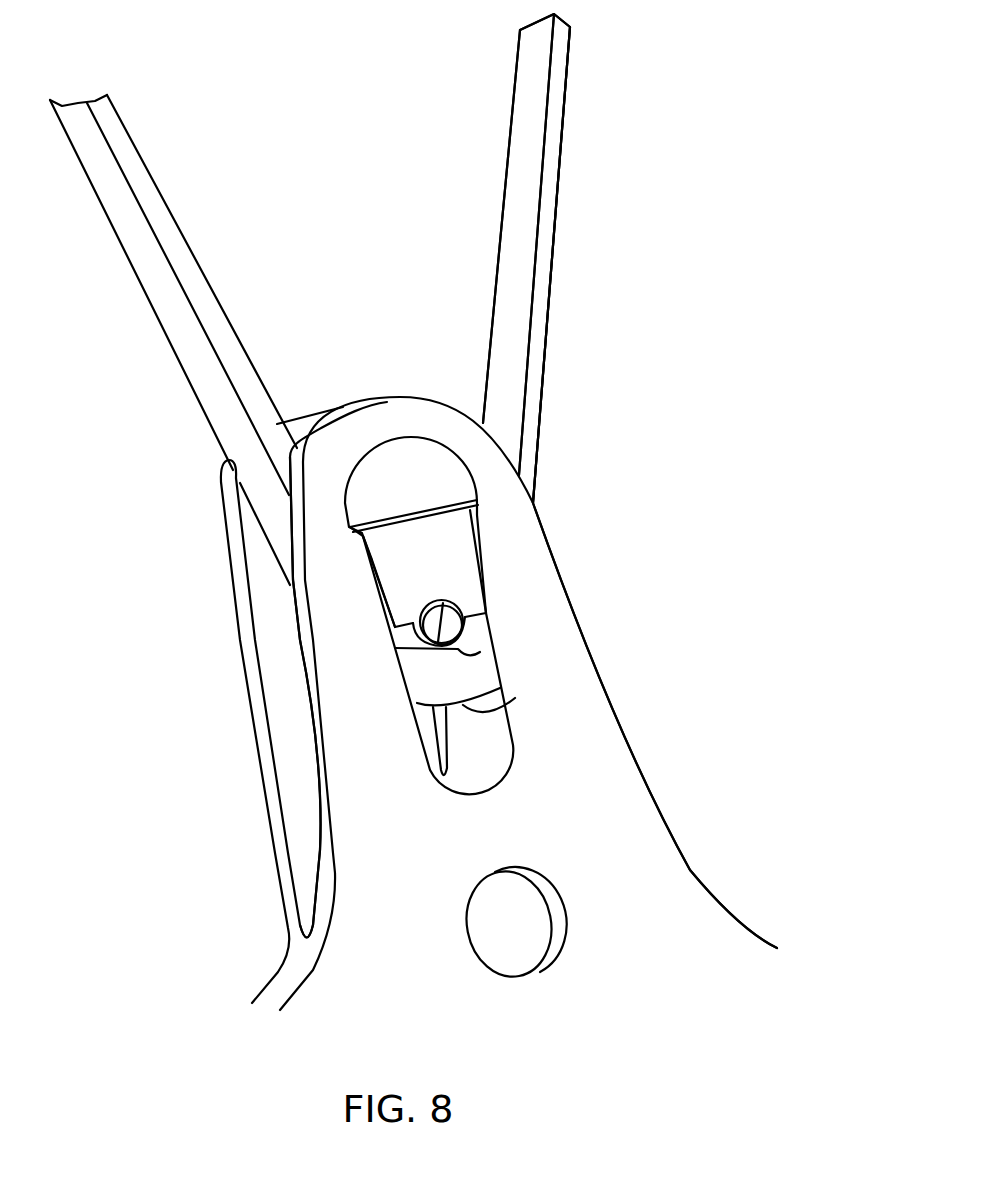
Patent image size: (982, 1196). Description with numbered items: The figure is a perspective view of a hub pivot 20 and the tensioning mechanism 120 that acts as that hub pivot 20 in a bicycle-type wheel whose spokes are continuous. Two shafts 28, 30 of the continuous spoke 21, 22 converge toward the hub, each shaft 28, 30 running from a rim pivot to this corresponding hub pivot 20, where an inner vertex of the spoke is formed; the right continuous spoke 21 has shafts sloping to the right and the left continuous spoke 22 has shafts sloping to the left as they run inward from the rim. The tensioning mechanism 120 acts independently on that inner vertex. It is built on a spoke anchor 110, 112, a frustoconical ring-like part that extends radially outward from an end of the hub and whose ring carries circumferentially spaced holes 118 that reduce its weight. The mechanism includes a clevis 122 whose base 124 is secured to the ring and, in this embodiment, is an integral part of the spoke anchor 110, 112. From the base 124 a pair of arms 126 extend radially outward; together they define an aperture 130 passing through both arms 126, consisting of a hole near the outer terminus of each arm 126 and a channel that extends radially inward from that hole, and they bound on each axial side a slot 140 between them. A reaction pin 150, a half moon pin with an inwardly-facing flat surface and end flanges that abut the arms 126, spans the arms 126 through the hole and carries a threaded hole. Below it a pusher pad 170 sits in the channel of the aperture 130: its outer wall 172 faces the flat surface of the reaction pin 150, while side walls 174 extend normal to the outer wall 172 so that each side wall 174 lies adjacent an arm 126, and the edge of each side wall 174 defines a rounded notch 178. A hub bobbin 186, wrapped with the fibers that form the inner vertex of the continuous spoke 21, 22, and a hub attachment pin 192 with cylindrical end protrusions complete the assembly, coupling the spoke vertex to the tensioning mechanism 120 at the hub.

The hub pivot 20 is at (615, 547).
The right continuous spoke 21 is at (565, 100).
The left continuous spoke 22 is at (648, 95).
The shaft 28 is at (140, 248).
The shaft 30 is at (543, 217).
The spoke anchor 110 is at (752, 930).
The spoke anchor 112 is at (752, 930).
The hole 118 is at (524, 945).
The tensioning mechanism 120 is at (356, 245).
The clevis 122 is at (185, 866).
The base 124 is at (296, 958).
The arm 126 is at (328, 855).
The aperture 130 is at (430, 740).
The slot 140 is at (283, 673).
The reaction pin 150 is at (473, 473).
The pusher pad 170 is at (473, 560).
The outer wall 172 is at (358, 535).
The side wall 174 is at (378, 581).
The rounded notch 178 is at (400, 650).
The hub bobbin 186 is at (508, 708).
The hub attachment pin 192 is at (460, 647).